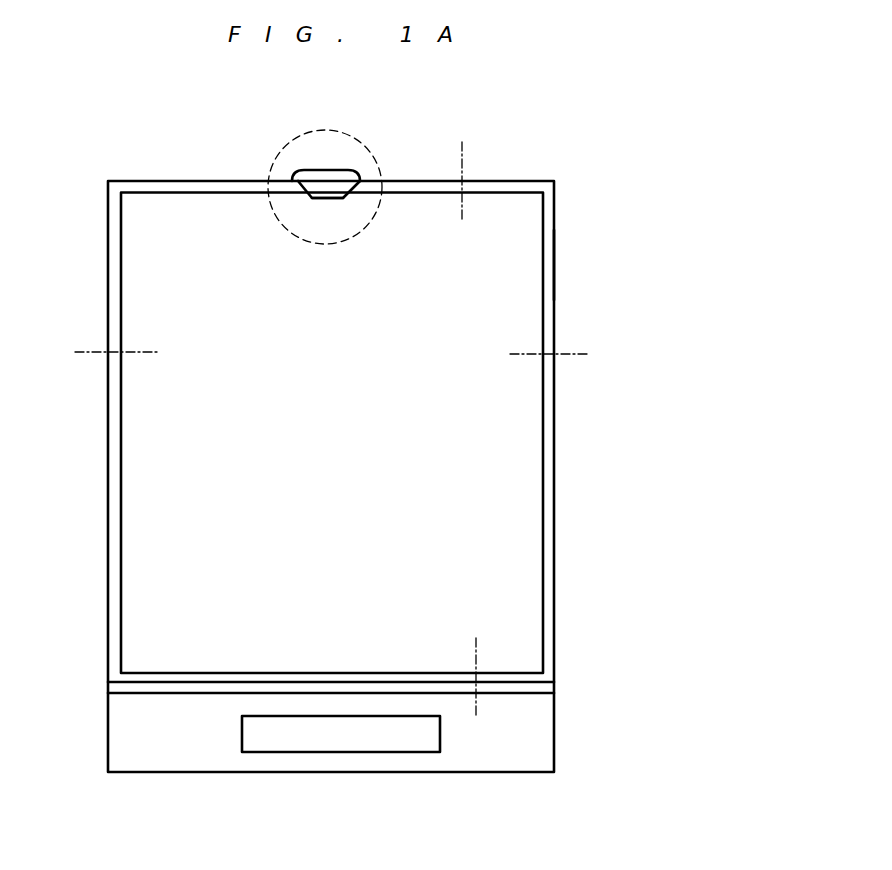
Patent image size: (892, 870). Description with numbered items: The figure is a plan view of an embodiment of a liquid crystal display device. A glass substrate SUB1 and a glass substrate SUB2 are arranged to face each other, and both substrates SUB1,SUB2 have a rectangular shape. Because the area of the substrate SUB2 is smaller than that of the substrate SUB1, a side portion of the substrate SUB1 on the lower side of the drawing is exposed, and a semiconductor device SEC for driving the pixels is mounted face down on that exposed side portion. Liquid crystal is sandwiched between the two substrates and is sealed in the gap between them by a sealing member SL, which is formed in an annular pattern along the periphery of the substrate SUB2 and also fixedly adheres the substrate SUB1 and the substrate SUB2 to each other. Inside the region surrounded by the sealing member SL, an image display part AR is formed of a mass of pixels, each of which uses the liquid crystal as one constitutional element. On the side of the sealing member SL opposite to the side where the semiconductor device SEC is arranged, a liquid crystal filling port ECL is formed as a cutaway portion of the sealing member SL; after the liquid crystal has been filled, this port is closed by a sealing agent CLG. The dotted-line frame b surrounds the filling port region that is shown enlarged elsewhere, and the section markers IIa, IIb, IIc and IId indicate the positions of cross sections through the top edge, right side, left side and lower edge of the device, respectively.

The substrate SUB1 is at (185, 773).
The substrate SUB2 is at (145, 693).
The substrates SUB1,SUB2 is at (554, 262).
The sealing member SL is at (118, 226).
The image display part AR is at (332, 433).
The semiconductor device SEC is at (375, 752).
The sealing agent CLG is at (303, 168).
The liquid crystal filling port ECL is at (327, 188).
The dotted-line frame b is at (325, 168).
The section line IIa is at (471, 158).
The section line IIb is at (521, 363).
The section line IIc is at (88, 361).
The section line IId is at (512, 650).